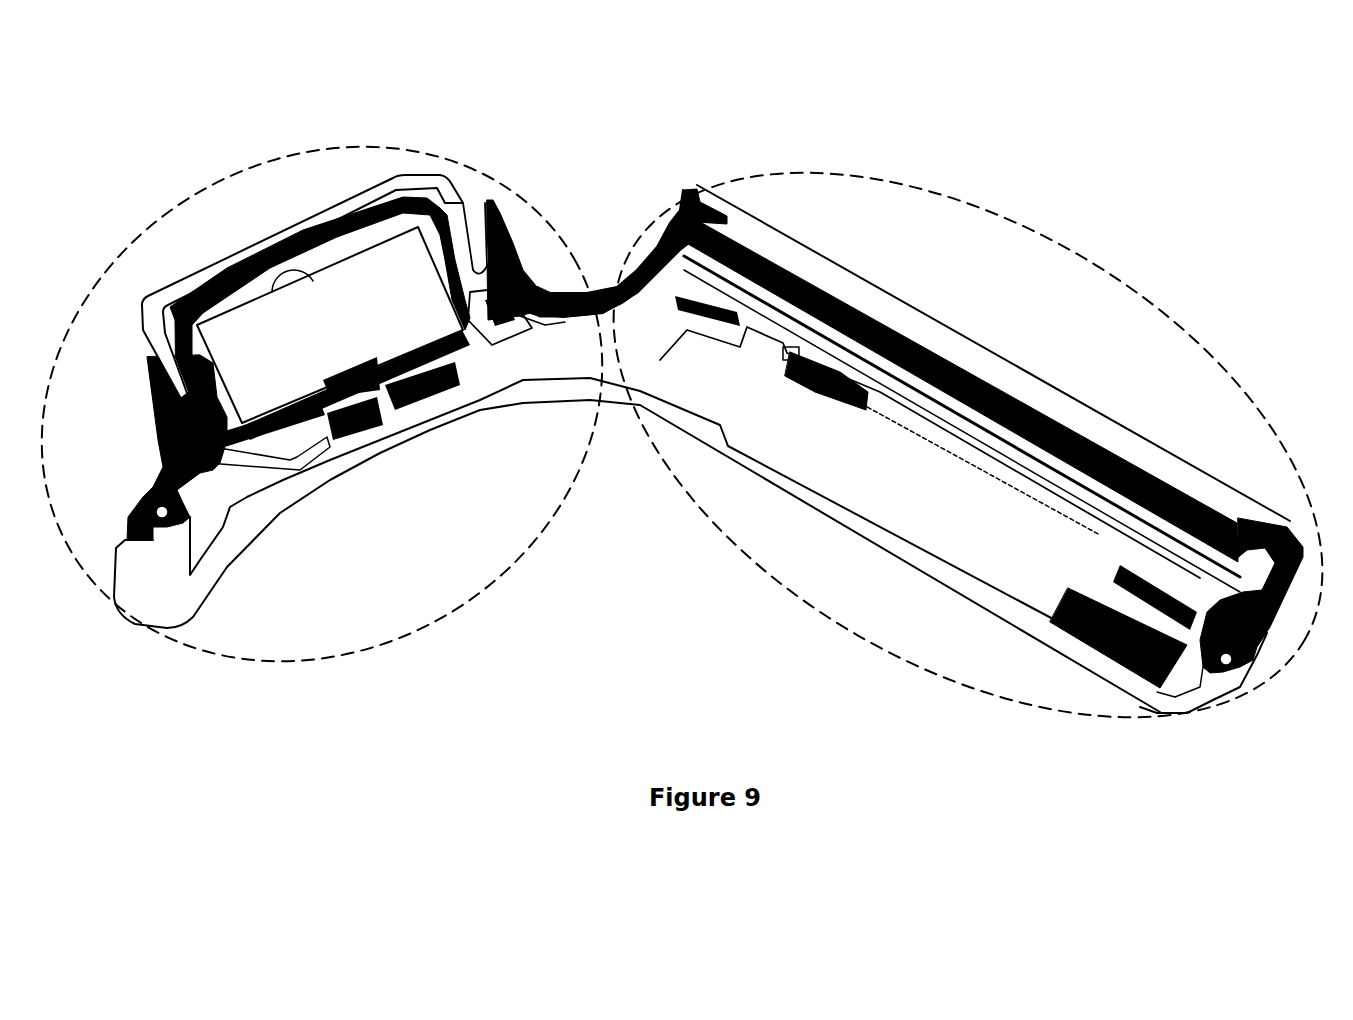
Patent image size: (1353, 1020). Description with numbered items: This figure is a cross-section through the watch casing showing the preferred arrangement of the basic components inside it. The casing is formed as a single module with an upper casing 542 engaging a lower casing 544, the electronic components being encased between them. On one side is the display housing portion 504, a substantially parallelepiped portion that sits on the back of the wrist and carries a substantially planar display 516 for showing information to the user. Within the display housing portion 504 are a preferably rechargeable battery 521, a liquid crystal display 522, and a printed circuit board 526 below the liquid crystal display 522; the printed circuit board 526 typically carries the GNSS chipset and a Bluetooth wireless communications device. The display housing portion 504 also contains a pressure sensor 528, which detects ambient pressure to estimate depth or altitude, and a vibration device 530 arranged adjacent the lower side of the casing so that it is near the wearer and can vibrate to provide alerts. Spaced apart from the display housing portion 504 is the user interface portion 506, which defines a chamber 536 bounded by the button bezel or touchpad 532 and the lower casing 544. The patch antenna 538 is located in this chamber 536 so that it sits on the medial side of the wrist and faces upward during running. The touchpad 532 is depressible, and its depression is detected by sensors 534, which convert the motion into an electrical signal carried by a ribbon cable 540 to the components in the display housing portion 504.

The display housing portion 504 is at (993, 205).
The user interface portion 506 is at (302, 676).
The display 516 is at (1168, 450).
The battery 521 is at (923, 513).
The liquid crystal display 522 is at (832, 290).
The printed circuit board 526 is at (675, 290).
The pressure sensor 528 is at (808, 372).
The vibration device 530 is at (1100, 647).
The touchpad 532 is at (227, 238).
The sensors 534 is at (497, 307).
The chamber 536 is at (383, 227).
The patch antenna 538 is at (360, 280).
The ribbon cable 540 is at (560, 323).
The upper casing 542 is at (522, 278).
The lower casing 544 is at (202, 590).